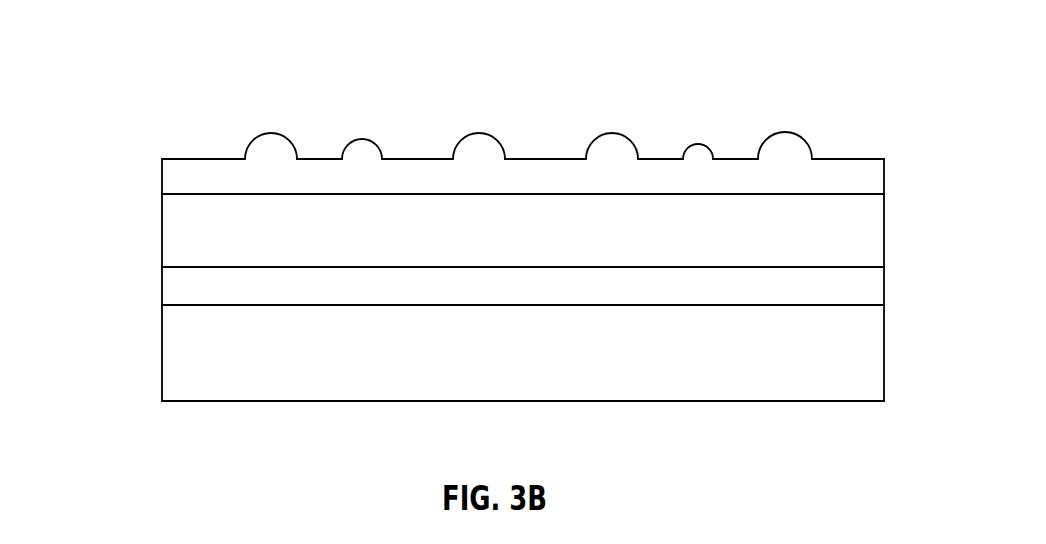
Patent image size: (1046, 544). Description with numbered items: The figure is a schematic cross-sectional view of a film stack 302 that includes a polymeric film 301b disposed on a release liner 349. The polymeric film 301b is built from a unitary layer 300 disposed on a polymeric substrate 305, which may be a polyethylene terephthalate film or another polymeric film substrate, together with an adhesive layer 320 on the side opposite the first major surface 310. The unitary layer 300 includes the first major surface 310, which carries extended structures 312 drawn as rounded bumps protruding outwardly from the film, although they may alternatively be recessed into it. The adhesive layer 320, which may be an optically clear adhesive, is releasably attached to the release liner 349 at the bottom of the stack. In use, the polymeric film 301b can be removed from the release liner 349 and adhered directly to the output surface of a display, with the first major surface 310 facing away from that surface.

The film stack 302 is at (131, 76).
The polymeric film 301b is at (155, 159).
The unitary layer 300 is at (865, 173).
The polymeric substrate 305 is at (866, 239).
The adhesive layer 320 is at (866, 292).
The release liner 349 is at (866, 365).
The first major surface 310 is at (522, 159).
The extended structures 312 is at (613, 133).